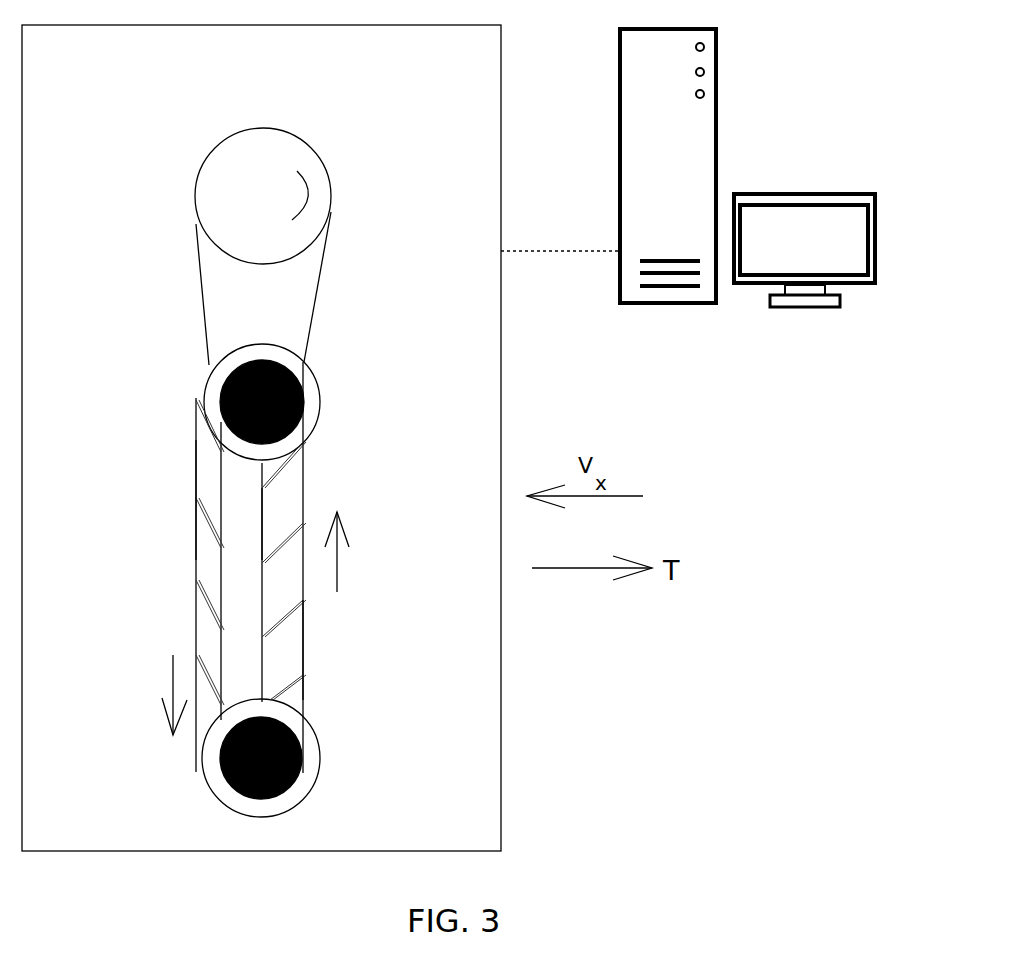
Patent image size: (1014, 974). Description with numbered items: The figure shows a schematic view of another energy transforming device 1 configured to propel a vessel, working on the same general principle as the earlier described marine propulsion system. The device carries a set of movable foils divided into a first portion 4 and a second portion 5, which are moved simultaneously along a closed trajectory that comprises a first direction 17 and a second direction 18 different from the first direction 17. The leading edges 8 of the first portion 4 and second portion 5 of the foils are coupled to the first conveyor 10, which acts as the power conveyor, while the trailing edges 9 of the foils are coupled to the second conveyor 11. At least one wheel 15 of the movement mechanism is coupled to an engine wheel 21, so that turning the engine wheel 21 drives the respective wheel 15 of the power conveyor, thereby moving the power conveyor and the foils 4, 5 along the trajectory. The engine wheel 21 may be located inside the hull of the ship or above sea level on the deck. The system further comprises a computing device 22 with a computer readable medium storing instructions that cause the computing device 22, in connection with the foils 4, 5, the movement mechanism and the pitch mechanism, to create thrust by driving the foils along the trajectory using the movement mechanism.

The energy transforming device 1 is at (585, 682).
The first portion of the set of movable foils 4 is at (303, 697).
The second portion of the set of movable foils 5 is at (207, 617).
The leading edges 8 is at (303, 600).
The trailing edges 9 is at (262, 488).
The first conveyor 10 is at (303, 637).
The second conveyor 11 is at (195, 482).
The wheel 15 is at (305, 370).
The first direction 17 is at (355, 552).
The second direction 18 is at (157, 695).
The engine wheel 21 is at (337, 192).
The computing device 22 is at (665, 305).